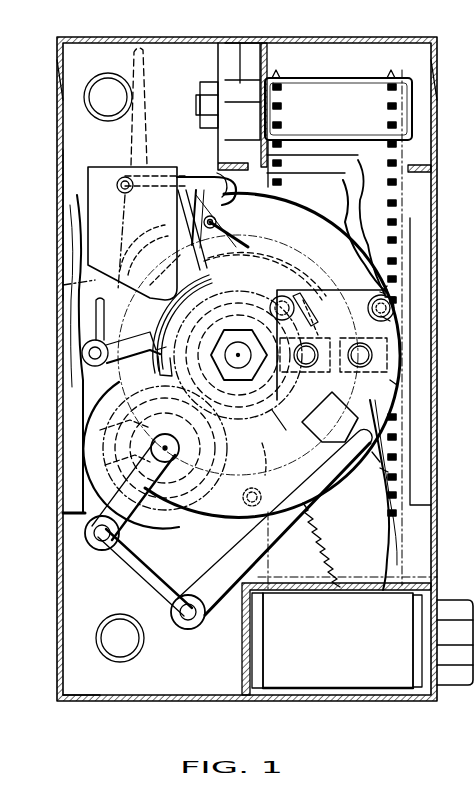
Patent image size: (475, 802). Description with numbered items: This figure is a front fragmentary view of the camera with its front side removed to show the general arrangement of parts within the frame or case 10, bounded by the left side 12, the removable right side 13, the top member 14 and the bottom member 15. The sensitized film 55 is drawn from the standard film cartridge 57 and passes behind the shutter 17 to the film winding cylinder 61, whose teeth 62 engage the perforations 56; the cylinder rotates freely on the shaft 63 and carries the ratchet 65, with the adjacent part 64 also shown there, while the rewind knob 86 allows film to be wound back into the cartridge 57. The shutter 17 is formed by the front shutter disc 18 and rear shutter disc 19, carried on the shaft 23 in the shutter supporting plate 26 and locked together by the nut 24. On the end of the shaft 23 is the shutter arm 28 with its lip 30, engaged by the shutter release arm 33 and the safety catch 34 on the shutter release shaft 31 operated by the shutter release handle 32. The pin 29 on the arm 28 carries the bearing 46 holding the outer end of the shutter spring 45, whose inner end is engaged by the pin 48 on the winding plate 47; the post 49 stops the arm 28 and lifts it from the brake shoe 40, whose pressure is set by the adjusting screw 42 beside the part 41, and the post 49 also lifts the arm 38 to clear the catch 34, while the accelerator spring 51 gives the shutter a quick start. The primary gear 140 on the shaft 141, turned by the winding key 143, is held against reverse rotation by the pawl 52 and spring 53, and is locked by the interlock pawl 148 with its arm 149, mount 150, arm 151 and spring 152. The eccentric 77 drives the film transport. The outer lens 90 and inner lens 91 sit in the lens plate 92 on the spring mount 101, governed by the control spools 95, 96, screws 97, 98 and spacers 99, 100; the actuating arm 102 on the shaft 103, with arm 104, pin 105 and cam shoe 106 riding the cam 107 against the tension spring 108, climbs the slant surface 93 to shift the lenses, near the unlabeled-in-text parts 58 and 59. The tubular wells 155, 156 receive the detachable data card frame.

The frame or case 10 is at (63, 43).
The left side member 12 is at (60, 73).
The right side member 13 is at (437, 72).
The top member 14 is at (264, 43).
The bottom member 15 is at (63, 698).
The shutter 17 is at (327, 187).
The front shutter disc 18 is at (315, 222).
The rear shutter disc 19 is at (330, 218).
The shutter shaft 23 is at (212, 352).
The nut 24 is at (236, 353).
The shutter supporting plate 26 is at (74, 263).
The shutter arm 28 is at (200, 266).
The pin 29 is at (216, 220).
The lip 30 is at (212, 190).
The shutter release shaft 31 is at (72, 155).
The shutter release handle 32 is at (125, 140).
The shutter release arm 33 is at (196, 188).
The safety catch 34 is at (190, 182).
The arm 38 is at (157, 190).
The brake shoe 40 is at (88, 180).
The pin 41 is at (95, 278).
The adjusting screw 42 is at (156, 277).
The shutter spring 45 is at (262, 253).
The bearing 46 is at (216, 222).
The winding plate 47 is at (284, 298).
The pin 48 is at (305, 312).
The post 49 is at (190, 250).
The accelerator spring 51 is at (95, 197).
The pawl 52 is at (254, 487).
The spring 53 is at (265, 445).
The sensitized film 55 is at (380, 155).
The perforations 56 is at (400, 165).
The film cartridge 57 is at (370, 660).
The spring 58 is at (308, 165).
The cam follower 59 is at (335, 430).
The film winding cylinder 61 is at (296, 95).
The teeth 62 is at (274, 70).
The shaft 63 is at (204, 82).
The screw 64 is at (212, 85).
The ratchet 65 is at (240, 45).
The eccentric 77 is at (289, 429).
The rewind knob 86 is at (460, 655).
The outer lens 90 is at (362, 355).
The inner lens 91 is at (392, 386).
The lens plate 92 is at (375, 455).
The slant surface 93 is at (385, 470).
The control spool 95 is at (388, 300).
The control spool 96 is at (370, 287).
The screw 97 is at (392, 308).
The screw 98 is at (382, 294).
The spacer 99 is at (388, 318).
The spacer 100 is at (303, 299).
The spring plate or mount 101 is at (285, 185).
The actuating arm 102 is at (228, 585).
The shaft 103 is at (186, 614).
The arm 104 is at (150, 573).
The pin 105 is at (96, 537).
The cam shoe 106 is at (80, 507).
The cam 107 is at (165, 416).
The tension spring 108 is at (303, 690).
The primary gear 140 is at (150, 452).
The shaft 141 is at (130, 462).
The camera winding key 143 is at (115, 428).
The pawl 148 is at (90, 393).
The arm 149 is at (84, 353).
The mount 150 is at (95, 355).
The arm 151 is at (95, 336).
The spring 152 is at (140, 238).
The tubular well 155 is at (100, 97).
The tubular well 156 is at (112, 640).